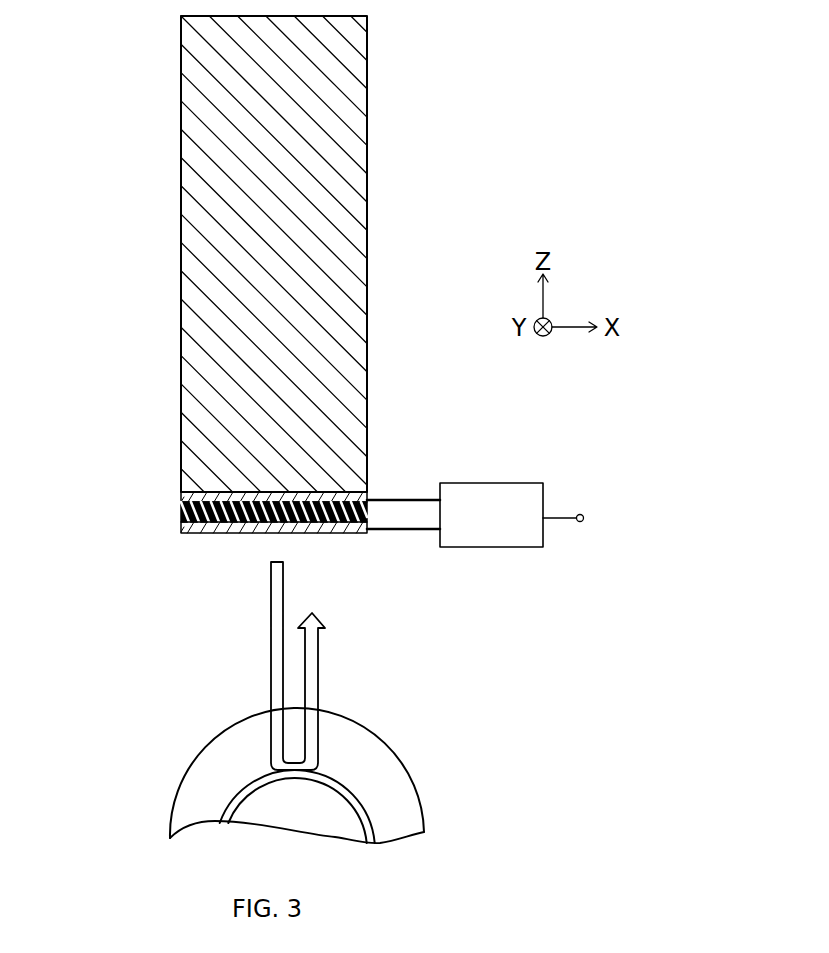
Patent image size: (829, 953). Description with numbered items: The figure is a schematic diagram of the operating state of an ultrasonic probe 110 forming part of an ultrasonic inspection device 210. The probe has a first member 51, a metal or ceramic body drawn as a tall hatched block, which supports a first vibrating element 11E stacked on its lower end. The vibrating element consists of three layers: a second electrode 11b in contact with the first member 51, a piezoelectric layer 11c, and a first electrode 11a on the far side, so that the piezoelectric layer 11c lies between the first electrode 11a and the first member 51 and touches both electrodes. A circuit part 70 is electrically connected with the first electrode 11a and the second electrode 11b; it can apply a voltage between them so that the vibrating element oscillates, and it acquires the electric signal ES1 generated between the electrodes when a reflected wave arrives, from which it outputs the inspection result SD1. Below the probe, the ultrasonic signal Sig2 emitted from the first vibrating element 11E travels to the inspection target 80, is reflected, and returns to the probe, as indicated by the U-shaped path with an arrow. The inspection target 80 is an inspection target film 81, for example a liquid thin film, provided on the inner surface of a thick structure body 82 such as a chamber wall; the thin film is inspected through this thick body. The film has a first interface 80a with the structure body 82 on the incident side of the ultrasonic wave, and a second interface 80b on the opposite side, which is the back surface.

The ultrasonic inspection device 210 is at (390, 63).
The ultrasonic probe 110 is at (390, 124).
The first member 51 is at (190, 232).
The first vibrating element 11E is at (92, 453).
The second electrode 11b is at (181, 497).
The piezoelectric layer 11c is at (181, 512).
The first electrode 11a is at (181, 528).
The circuit part 70 is at (540, 483).
The electric signal ES1 is at (405, 531).
The inspection result SD1 is at (584, 521).
The ultrasonic signal Sig2 is at (271, 628).
The inspection target 80 is at (378, 795).
The structure body 82 is at (355, 755).
The inspection target film 81 is at (370, 818).
The first interface 80a is at (247, 780).
The second interface 80b is at (248, 795).